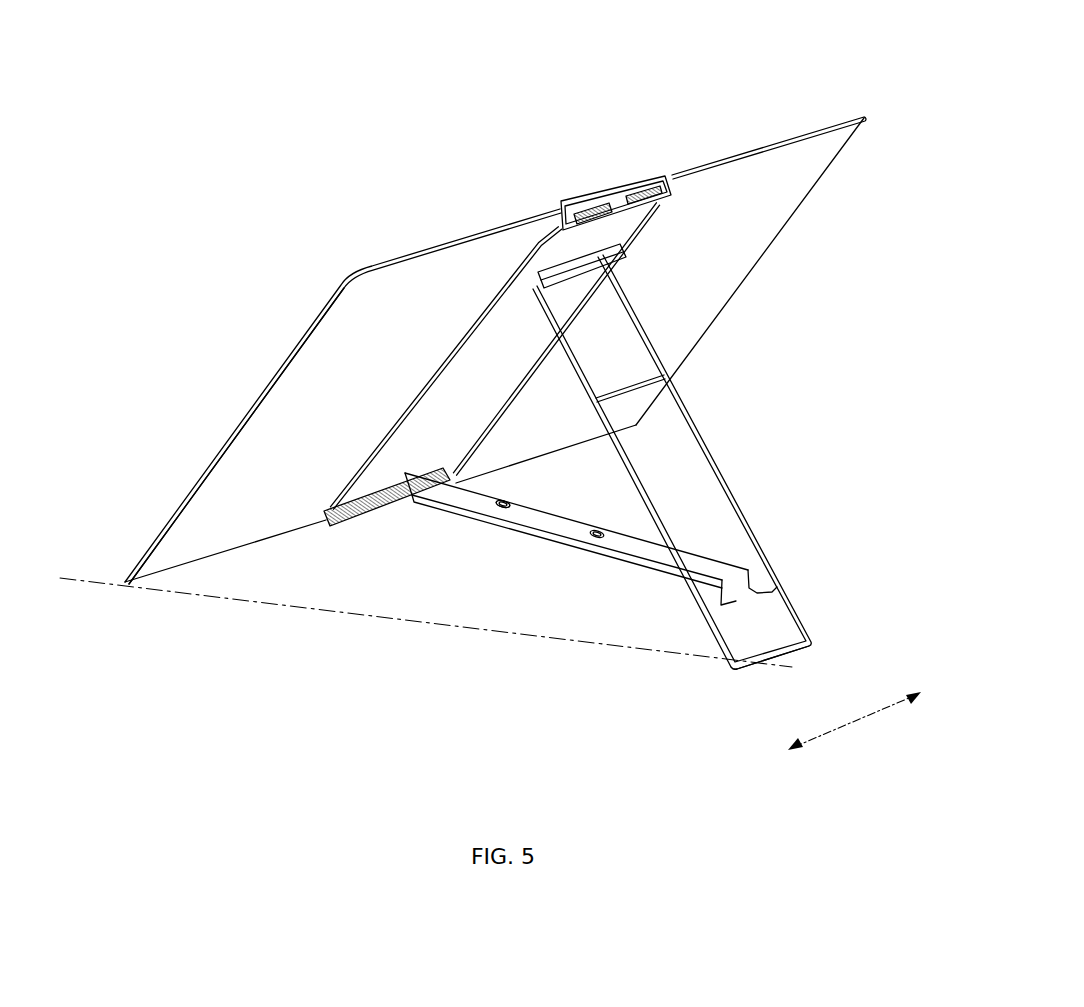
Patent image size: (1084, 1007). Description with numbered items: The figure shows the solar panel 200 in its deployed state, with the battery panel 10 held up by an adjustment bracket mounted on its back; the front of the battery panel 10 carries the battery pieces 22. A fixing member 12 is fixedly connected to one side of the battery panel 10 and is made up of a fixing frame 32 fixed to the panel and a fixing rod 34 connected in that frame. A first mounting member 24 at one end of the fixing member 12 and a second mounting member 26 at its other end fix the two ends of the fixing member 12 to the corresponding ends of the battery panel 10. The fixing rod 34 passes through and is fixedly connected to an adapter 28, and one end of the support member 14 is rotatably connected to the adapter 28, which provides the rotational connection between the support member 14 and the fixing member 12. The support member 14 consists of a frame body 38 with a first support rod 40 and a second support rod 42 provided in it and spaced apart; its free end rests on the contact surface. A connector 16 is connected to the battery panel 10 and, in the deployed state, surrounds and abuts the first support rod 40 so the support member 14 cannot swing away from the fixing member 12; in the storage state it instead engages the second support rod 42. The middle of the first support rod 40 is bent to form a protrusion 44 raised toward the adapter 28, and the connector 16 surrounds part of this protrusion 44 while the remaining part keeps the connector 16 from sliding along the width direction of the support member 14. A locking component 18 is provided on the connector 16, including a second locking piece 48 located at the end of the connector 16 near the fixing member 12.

The solar panel 200 is at (204, 86).
The battery panel 10 is at (783, 175).
The fixing member 12 is at (300, 219).
The support member 14 is at (715, 462).
The connector 16 is at (572, 630).
The locking component 18 is at (530, 702).
The battery pieces 22 is at (667, 657).
The first mounting member 24 is at (611, 186).
The second mounting member 26 is at (350, 524).
The adapter 28 is at (563, 258).
The fixing frame 32 is at (418, 394).
The fixing rod 34 is at (655, 213).
The frame body 38 is at (690, 422).
The first support rod 40 is at (787, 604).
The second support rod 42 is at (640, 382).
The protrusion 44 is at (757, 580).
The second locking piece 48 is at (592, 528).